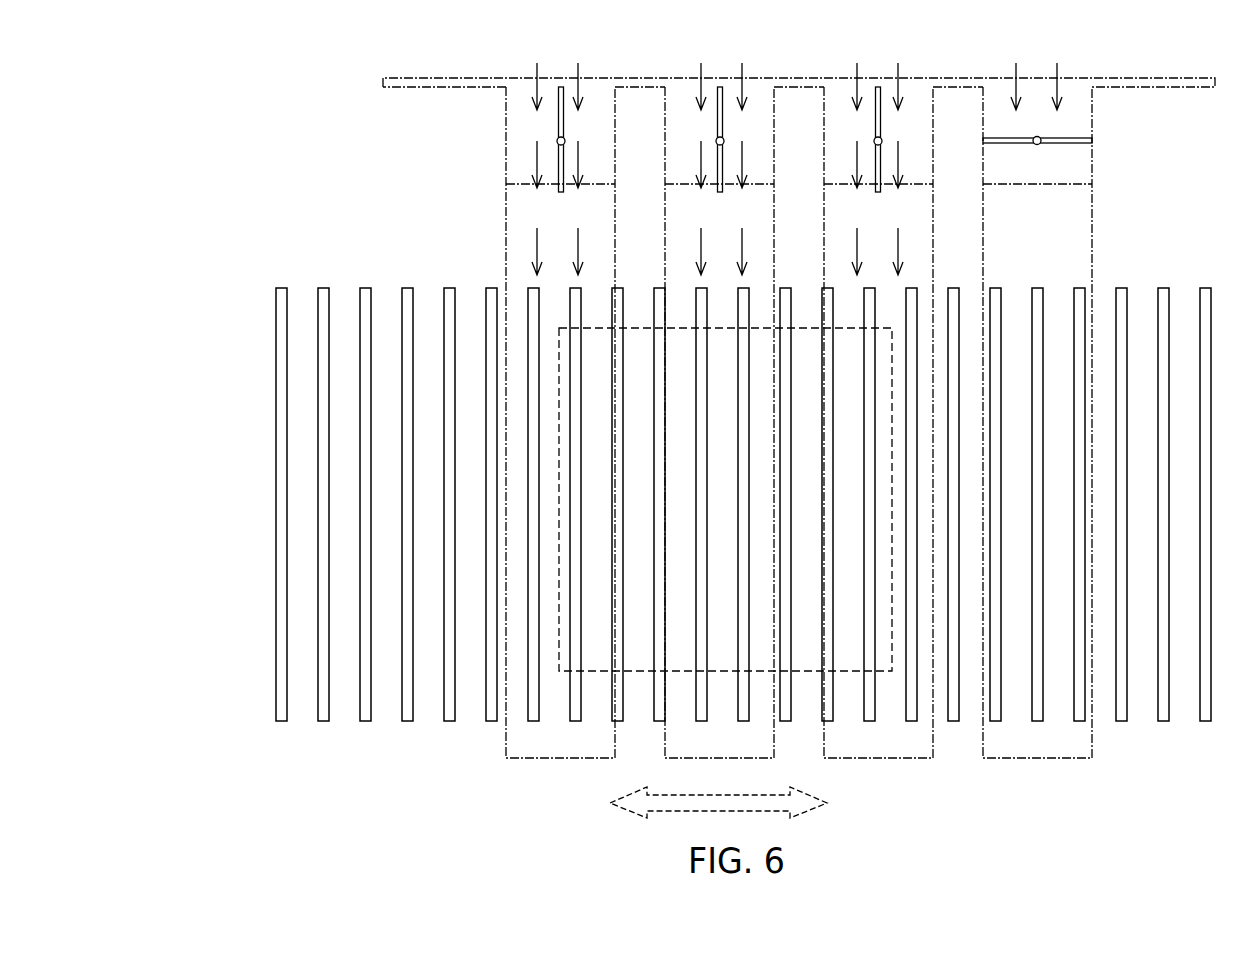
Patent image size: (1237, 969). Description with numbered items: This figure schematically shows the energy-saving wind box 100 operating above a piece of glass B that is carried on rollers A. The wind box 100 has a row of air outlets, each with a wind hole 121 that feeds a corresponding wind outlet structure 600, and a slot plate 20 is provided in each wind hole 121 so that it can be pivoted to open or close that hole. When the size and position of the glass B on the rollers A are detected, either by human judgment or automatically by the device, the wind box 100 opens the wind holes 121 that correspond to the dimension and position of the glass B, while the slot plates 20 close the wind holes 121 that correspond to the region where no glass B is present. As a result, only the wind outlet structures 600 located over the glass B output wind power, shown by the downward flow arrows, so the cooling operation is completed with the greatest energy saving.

The energy-saving wind box 100 is at (389, 76).
The wind hole 121 is at (518, 133).
The slot plate 20 is at (556, 191).
The wind outlet structure 600 is at (751, 388).
The rollers A is at (278, 440).
The glass B is at (585, 660).